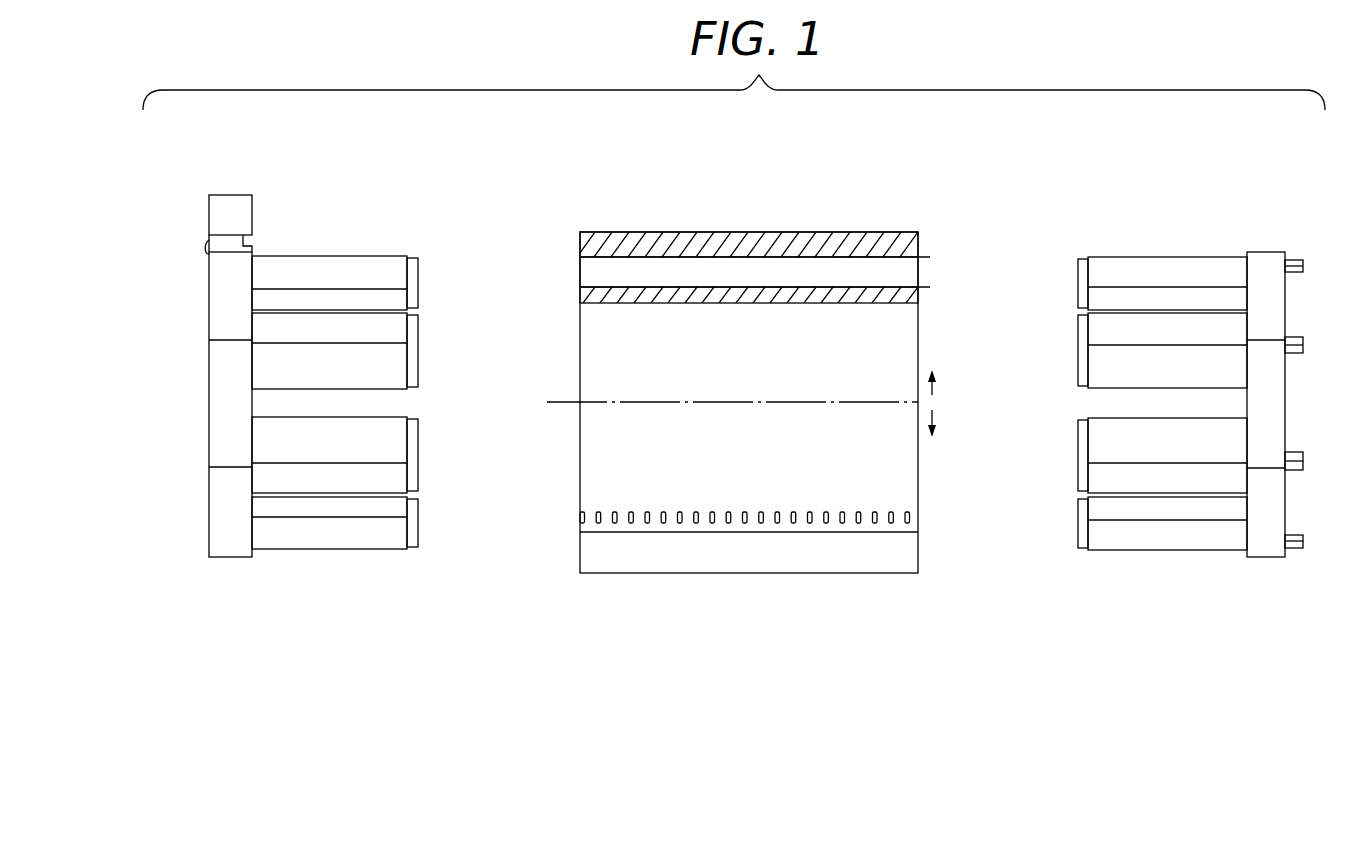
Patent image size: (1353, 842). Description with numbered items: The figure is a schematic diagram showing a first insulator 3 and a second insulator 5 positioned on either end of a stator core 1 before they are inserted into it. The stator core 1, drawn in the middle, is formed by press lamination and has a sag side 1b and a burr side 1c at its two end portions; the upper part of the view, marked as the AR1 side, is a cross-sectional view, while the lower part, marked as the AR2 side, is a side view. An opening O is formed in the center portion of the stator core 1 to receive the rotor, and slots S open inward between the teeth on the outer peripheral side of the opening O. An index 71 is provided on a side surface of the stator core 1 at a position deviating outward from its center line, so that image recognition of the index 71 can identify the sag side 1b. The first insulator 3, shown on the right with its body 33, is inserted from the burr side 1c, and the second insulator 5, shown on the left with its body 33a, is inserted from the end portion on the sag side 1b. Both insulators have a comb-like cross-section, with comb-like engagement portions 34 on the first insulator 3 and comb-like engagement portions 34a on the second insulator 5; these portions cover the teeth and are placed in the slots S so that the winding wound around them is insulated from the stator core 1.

The stator core 1 is at (745, 198).
The sag side 1b is at (580, 288).
The burr side 1c is at (923, 254).
The slot S is at (600, 275).
The opening O is at (918, 347).
The index 71 is at (910, 516).
The AR1 side AR1 is at (958, 384).
The AR2 side AR2 is at (958, 423).
The first insulator 3 is at (1206, 198).
The connector block 33 is at (1270, 267).
The comb-like engagement portion 34 is at (1118, 275).
The second insulator 5 is at (328, 198).
The connector block 33a is at (223, 293).
The comb-like engagement portion 34a is at (373, 275).